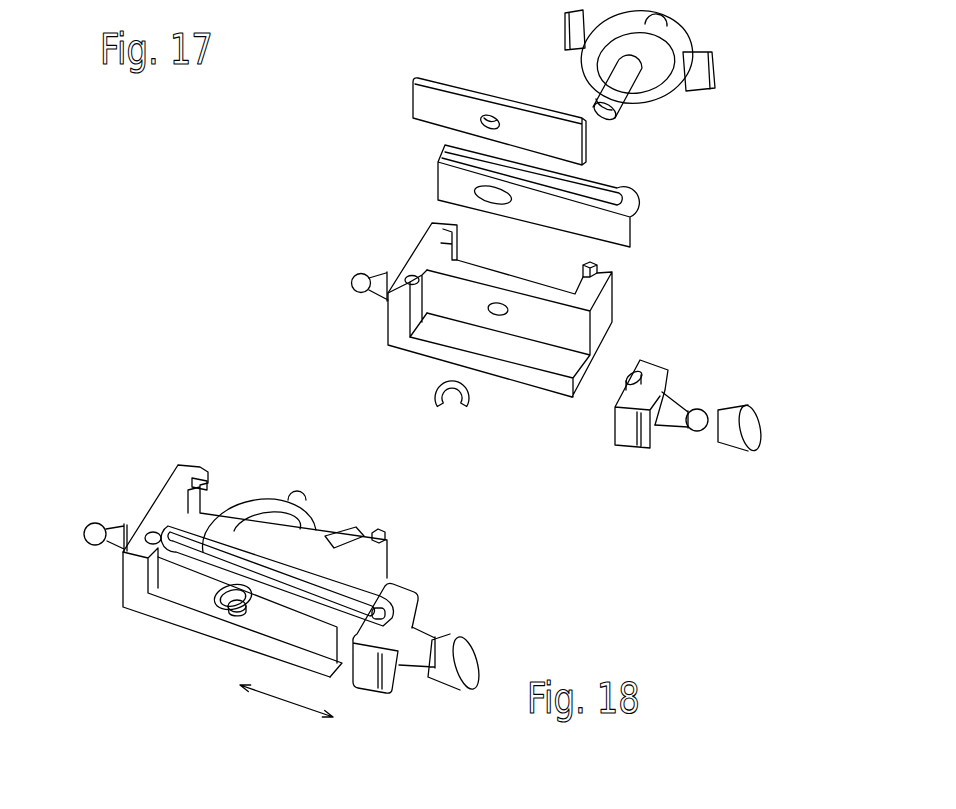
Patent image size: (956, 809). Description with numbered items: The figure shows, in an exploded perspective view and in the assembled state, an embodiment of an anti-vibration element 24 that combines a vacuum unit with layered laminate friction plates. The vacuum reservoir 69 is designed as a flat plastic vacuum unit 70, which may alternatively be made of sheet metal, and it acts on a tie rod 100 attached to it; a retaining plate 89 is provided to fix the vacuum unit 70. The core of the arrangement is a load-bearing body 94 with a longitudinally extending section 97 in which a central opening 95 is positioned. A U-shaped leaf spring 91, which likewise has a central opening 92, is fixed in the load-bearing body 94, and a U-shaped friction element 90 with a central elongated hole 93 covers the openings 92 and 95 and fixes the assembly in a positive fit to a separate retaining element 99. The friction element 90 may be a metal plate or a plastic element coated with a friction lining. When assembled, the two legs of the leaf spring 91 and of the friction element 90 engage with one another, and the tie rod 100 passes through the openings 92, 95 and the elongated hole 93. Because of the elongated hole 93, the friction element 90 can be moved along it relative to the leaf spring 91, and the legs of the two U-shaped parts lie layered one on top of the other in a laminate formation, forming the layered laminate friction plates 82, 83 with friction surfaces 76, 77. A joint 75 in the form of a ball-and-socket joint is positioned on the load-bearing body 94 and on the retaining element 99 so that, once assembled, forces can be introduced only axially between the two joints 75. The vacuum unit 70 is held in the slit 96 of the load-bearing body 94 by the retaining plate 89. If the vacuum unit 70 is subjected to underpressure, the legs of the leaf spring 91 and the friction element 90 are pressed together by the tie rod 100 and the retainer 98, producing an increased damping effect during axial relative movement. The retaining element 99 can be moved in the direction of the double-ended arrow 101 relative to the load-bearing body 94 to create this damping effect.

In FIG. 17, the anti-vibration element 24 is at (222, 195).
In FIG. 18, the anti-vibration element 24 is at (128, 633).
In FIG. 17, the vacuum reservoir 69 is at (607, 86).
In FIG. 17, the vacuum unit 70 is at (660, 44).
In FIG. 18, the vacuum unit 70 is at (263, 495).
In FIG. 17, the joint 75 is at (360, 275).
In FIG. 18, the joint 75 is at (98, 498).
In FIG. 17, the friction surface 76 is at (512, 204).
In FIG. 17, the friction surface 77 is at (449, 96).
In FIG. 17, the layered laminate friction plate 82 is at (601, 165).
In FIG. 17, the layered laminate friction plate 83 is at (423, 170).
In FIG. 17, the retaining plate 89 is at (704, 63).
In FIG. 18, the retaining plate 89 is at (338, 535).
In FIG. 17, the friction element 90 is at (600, 228).
In FIG. 18, the friction element 90 is at (380, 585).
In FIG. 17, the leaf spring 91 is at (458, 96).
In FIG. 18, the leaf spring 91 is at (172, 572).
In FIG. 17, the central opening 92 is at (492, 115).
In FIG. 17, the elongated hole 93 is at (438, 194).
In FIG. 17, the load-bearing body 94 is at (507, 310).
In FIG. 18, the load-bearing body 94 is at (294, 532).
In FIG. 17, the central opening 95 is at (500, 304).
In FIG. 17, the slit 96 is at (598, 266).
In FIG. 18, the slit 96 is at (382, 538).
In FIG. 17, the longitudinally extending section 97 is at (550, 328).
In FIG. 17, the retainer 98 is at (436, 395).
In FIG. 18, the retainer 98 is at (220, 600).
In FIG. 17, the retaining element 99 is at (630, 437).
In FIG. 18, the retaining element 99 is at (455, 650).
In FIG. 17, the tie rod 100 is at (632, 75).
In FIG. 18, the tie rod 100 is at (228, 612).
In FIG. 18, the double-ended arrow 101 is at (287, 707).